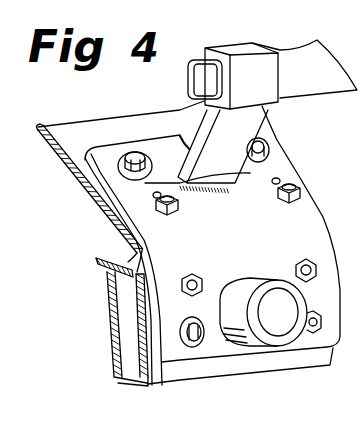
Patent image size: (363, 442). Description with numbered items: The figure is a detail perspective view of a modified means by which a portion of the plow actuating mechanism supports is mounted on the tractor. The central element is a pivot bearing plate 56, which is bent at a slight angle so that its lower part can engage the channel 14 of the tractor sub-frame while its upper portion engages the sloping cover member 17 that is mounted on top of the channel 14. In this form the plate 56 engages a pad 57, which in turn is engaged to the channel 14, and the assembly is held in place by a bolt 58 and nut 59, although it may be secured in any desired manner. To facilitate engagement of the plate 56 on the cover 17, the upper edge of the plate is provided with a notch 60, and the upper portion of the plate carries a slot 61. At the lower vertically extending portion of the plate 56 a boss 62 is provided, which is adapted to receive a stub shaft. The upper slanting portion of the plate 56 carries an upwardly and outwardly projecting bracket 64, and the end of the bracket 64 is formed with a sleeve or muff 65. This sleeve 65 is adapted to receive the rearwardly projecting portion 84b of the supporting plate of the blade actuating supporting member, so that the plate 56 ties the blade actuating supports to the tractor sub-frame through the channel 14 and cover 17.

The channel 14 is at (125, 302).
The sloping cover member 17 is at (70, 147).
The pivot bearing plate 56 is at (180, 252).
The pad 57 is at (140, 328).
The bolt 58 is at (160, 207).
The nut 59 is at (153, 195).
The notch 60 is at (117, 143).
The slot 61 is at (250, 173).
The boss 62 is at (239, 300).
The bracket 64 is at (237, 127).
The sleeve 65 is at (247, 72).
The rearwardly projecting portion 84b is at (305, 92).